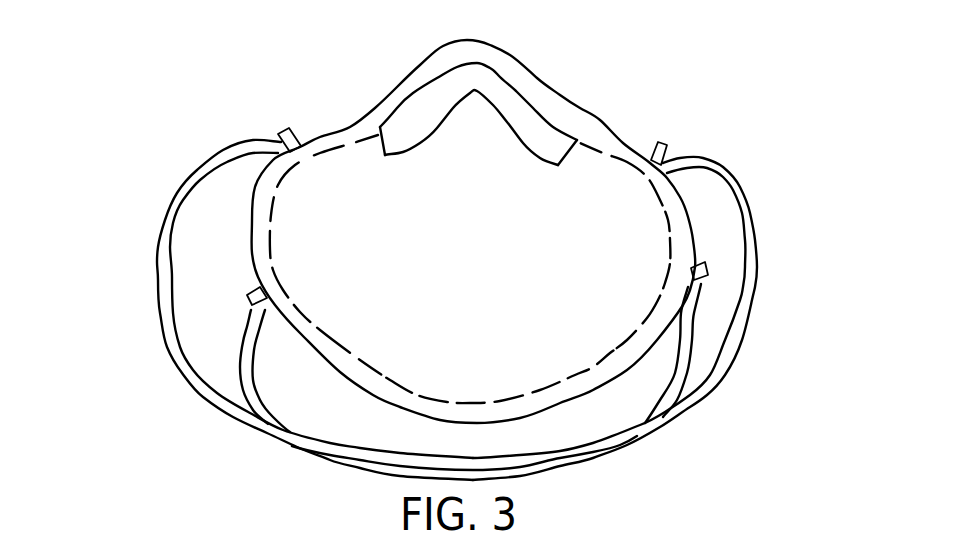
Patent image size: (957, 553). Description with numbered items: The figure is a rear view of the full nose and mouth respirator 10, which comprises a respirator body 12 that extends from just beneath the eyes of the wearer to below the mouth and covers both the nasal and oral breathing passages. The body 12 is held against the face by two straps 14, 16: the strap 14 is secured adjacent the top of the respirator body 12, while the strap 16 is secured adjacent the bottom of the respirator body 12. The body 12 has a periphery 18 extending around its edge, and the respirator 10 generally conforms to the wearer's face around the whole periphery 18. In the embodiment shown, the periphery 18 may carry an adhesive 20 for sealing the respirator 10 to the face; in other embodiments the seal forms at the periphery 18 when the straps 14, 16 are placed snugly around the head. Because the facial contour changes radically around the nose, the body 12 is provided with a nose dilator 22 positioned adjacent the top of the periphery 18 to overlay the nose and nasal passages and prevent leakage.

The respirator 10 is at (319, 119).
The respirator body 12 is at (600, 157).
The strap 14 is at (210, 156).
The strap 16 is at (250, 340).
The periphery 18 is at (667, 212).
The adhesive 20 is at (523, 124).
The nose dilator 22 is at (422, 125).